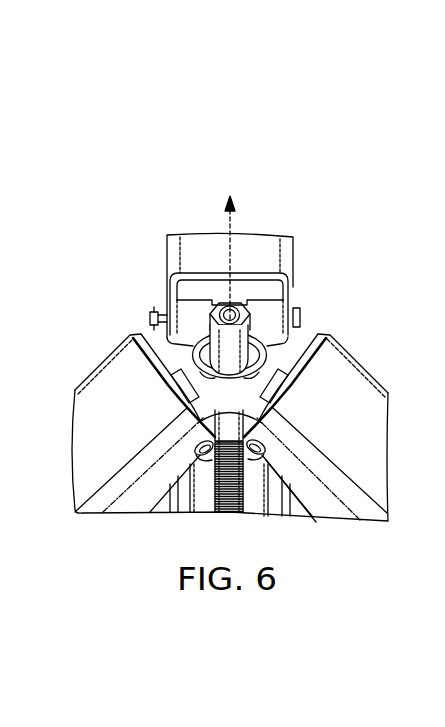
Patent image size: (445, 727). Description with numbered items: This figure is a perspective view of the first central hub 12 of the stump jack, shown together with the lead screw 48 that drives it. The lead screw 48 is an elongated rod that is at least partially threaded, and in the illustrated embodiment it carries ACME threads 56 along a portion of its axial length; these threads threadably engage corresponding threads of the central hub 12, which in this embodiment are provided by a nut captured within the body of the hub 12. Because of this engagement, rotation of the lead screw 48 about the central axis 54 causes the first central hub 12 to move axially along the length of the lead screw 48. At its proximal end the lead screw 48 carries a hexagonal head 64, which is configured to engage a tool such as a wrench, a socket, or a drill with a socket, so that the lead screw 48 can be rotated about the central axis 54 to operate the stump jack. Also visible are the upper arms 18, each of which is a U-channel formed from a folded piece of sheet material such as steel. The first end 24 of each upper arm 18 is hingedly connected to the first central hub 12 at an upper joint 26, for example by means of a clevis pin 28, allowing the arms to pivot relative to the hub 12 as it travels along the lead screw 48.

The first central hub 12 is at (290, 350).
The upper arm 18 is at (93, 442).
The first end 24 is at (112, 380).
The upper joint 26 is at (103, 343).
The clevis pin 28 is at (266, 460).
The lead screw 48 is at (215, 495).
The central axis 54 is at (231, 232).
The ACME threads 56 is at (260, 343).
The hexagonal head 64 is at (216, 333).